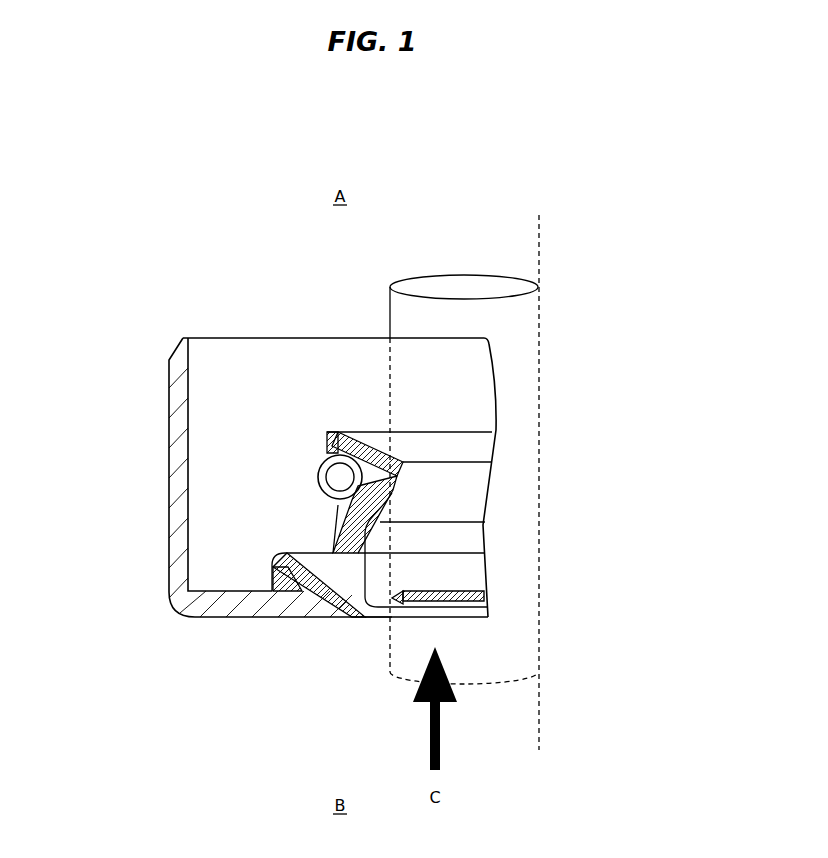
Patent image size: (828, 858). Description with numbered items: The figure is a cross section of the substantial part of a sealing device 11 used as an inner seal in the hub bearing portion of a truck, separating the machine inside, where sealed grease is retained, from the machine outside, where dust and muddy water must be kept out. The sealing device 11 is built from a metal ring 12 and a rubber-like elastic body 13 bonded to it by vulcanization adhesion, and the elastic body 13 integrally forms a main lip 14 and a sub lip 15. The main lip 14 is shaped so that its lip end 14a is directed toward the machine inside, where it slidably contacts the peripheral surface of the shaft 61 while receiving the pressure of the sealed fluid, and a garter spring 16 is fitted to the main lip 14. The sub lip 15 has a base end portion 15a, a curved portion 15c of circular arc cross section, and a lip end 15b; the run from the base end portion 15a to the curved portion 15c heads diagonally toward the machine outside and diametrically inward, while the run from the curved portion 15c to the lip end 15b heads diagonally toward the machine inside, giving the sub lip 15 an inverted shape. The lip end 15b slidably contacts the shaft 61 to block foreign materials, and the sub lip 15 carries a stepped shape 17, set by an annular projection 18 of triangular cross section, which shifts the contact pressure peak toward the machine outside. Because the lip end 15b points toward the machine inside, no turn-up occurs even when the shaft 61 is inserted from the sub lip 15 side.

The sealing device 11 is at (160, 357).
The metal ring 12 is at (176, 488).
The rubber-like elastic body 13 is at (285, 553).
The main lip 14 is at (393, 490).
The lip end 14a is at (403, 461).
The sub lip 15 is at (372, 608).
The base end portion 15a is at (338, 612).
The lip end 15b is at (397, 597).
The curved portion 15c is at (360, 612).
The garter spring 16 is at (319, 466).
The stepped shape 17 is at (418, 616).
The annular projection 18 is at (456, 618).
The shaft 61 is at (520, 318).